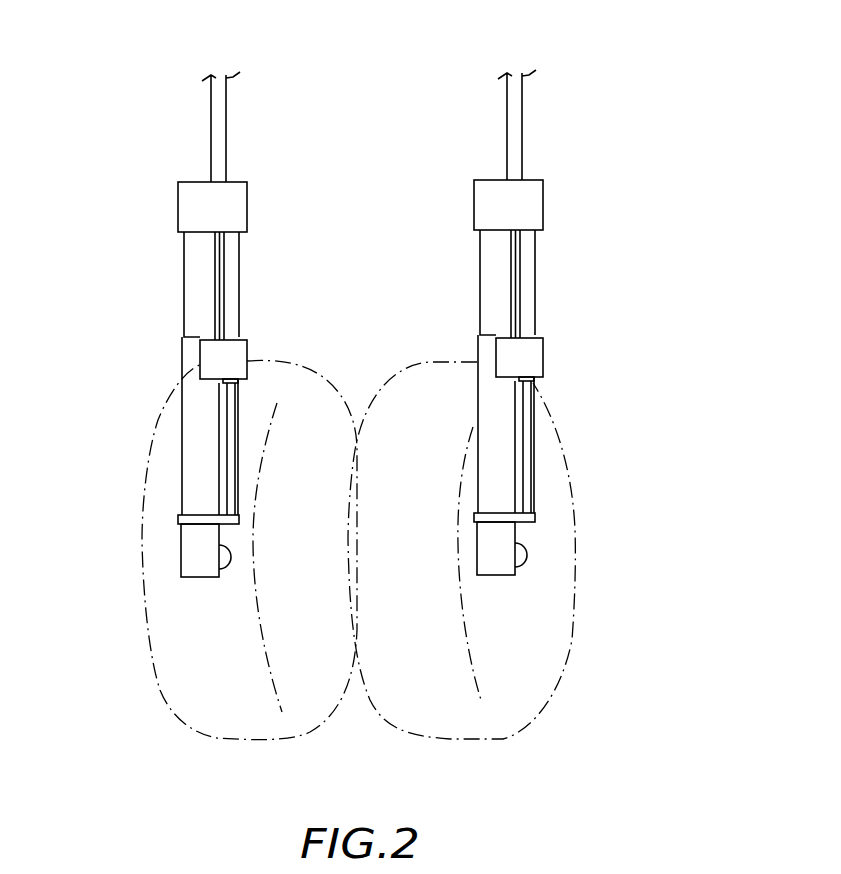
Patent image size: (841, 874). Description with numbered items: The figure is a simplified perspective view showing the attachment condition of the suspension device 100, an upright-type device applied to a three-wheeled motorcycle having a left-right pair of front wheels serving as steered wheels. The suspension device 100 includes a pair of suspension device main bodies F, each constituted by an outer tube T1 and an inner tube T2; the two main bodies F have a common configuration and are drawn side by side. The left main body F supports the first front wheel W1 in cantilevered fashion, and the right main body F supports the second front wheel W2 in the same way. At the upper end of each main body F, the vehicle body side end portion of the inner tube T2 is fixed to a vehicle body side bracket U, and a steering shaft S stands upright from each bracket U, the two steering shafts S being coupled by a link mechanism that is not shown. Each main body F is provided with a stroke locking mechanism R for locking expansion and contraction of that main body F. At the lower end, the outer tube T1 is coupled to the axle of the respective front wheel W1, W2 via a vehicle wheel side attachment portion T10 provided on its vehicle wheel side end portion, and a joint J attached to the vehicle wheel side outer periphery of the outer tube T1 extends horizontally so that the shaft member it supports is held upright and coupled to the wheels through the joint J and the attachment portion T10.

The suspension device 100 is at (612, 100).
The steering shaft S is at (211, 112).
The vehicle body side bracket U is at (190, 206).
The inner tube T2 is at (195, 297).
The stroke locking mechanism R is at (231, 298).
The suspension device main body F is at (170, 353).
The outer tube T1 is at (197, 452).
The joint J is at (197, 525).
The vehicle wheel side attachment portion T10 is at (232, 558).
The first front wheel W1 is at (172, 675).
The second front wheel W2 is at (513, 688).